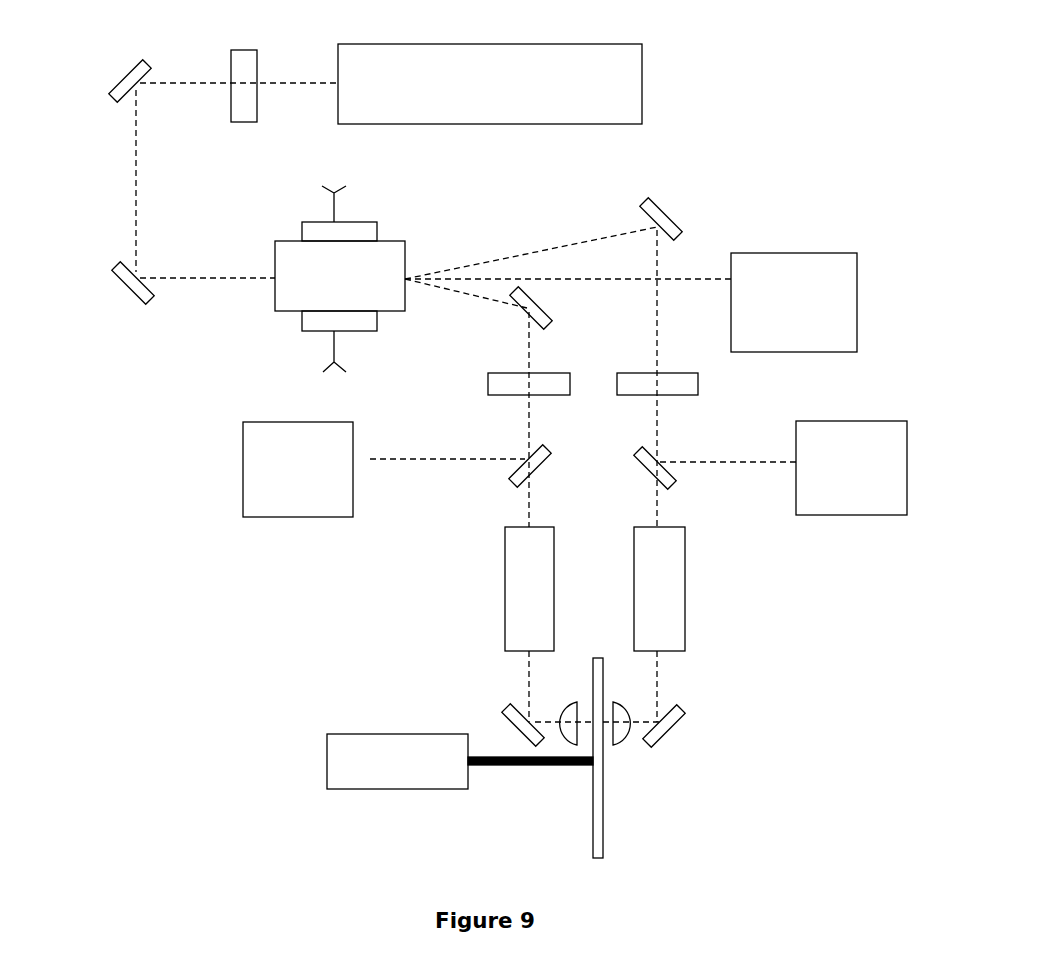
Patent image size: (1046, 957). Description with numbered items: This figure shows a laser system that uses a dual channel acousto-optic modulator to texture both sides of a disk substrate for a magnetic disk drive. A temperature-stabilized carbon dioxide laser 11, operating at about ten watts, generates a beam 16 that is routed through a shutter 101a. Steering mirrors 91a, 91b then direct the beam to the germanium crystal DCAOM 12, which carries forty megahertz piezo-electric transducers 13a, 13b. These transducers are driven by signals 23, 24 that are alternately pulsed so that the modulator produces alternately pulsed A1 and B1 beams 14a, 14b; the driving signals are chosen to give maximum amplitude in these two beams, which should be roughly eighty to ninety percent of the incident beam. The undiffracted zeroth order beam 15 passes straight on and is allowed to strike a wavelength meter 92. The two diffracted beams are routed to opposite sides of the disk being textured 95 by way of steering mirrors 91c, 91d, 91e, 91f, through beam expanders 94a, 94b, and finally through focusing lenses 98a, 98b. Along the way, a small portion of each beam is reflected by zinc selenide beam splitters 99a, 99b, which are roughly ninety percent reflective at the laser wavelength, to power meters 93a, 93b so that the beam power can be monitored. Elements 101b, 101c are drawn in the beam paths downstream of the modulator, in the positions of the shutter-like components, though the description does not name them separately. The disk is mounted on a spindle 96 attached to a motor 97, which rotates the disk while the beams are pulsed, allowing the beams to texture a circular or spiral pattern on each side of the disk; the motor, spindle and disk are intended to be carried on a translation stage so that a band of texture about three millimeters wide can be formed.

The carbon dioxide laser 11 is at (633, 78).
The beam 16 is at (285, 73).
The shutter 101a is at (250, 107).
The steering mirror 91a is at (123, 88).
The steering mirror 91b is at (125, 283).
The steering mirror 91c is at (668, 205).
The steering mirror 91d is at (543, 307).
The steering mirror 91e is at (507, 710).
The steering mirror 91f is at (672, 718).
The DCAOM 12 is at (282, 253).
The piezo-electric transducer 13a is at (360, 230).
The piezo-electric transducer 13b is at (367, 323).
The driving signal 23 is at (334, 193).
The driving signal 24 is at (334, 364).
The A1 beam 14a is at (483, 305).
The B1 beam 14b is at (547, 243).
The zeroth order beam 15 is at (683, 285).
The wavelength meter 92 is at (818, 263).
The filter 101b is at (500, 382).
The filter 101c is at (693, 385).
The power meter 93a is at (253, 440).
The power meter 93b is at (860, 507).
The beam splitter 99a is at (548, 455).
The beam splitter 99b is at (640, 448).
The beam expander 94a is at (518, 555).
The beam expander 94b is at (680, 565).
The focusing lens 98a is at (572, 710).
The focusing lens 98b is at (622, 740).
The disk being textured 95 is at (607, 827).
The spindle 96 is at (538, 767).
The motor 97 is at (350, 785).